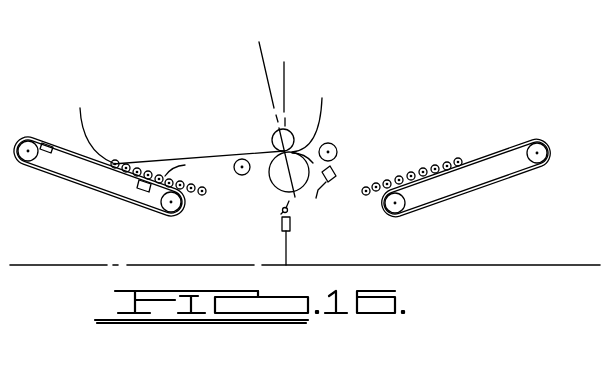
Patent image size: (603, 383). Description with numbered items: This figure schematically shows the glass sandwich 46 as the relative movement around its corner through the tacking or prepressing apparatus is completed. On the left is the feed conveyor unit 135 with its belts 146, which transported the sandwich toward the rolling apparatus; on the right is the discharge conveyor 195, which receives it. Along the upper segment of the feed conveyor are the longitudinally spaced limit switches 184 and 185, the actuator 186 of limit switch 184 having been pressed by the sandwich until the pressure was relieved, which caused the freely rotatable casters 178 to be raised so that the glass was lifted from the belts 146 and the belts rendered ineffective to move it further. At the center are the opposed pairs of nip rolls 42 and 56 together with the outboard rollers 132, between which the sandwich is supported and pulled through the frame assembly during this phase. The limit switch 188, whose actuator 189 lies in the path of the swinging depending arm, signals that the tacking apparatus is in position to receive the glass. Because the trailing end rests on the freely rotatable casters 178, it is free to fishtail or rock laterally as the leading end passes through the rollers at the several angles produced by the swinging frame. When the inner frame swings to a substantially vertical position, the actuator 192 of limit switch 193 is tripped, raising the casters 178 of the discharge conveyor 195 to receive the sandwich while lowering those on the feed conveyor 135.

The nip rolls 42 is at (273, 137).
The glass sandwich 46 is at (163, 158).
The nip rolls 56 is at (305, 148).
The outboard rollers 132 is at (241, 176).
The feed conveyor unit 135 is at (63, 180).
The belts 146 is at (97, 195).
The freely rotatable casters 178 is at (165, 176).
The limit switch 184 is at (45, 142).
The limit switch 185 is at (145, 192).
The actuator 186 is at (60, 148).
The limit switch 188 is at (316, 198).
The actuator 189 is at (334, 168).
The actuator 192 is at (281, 213).
The limit switch 193 is at (291, 226).
The discharge conveyor 195 is at (460, 184).